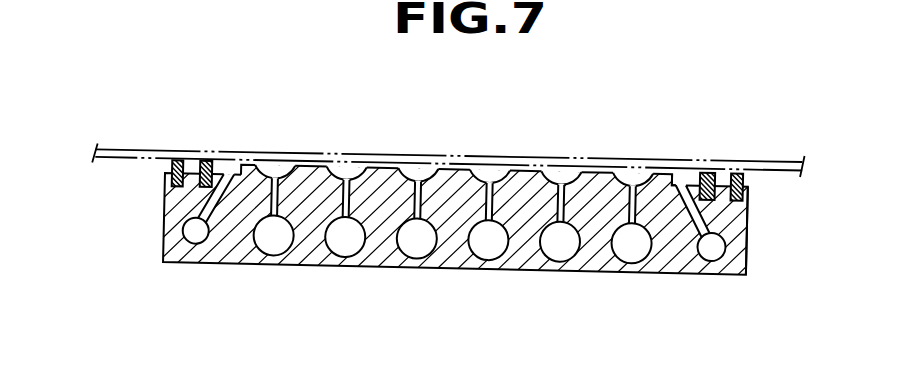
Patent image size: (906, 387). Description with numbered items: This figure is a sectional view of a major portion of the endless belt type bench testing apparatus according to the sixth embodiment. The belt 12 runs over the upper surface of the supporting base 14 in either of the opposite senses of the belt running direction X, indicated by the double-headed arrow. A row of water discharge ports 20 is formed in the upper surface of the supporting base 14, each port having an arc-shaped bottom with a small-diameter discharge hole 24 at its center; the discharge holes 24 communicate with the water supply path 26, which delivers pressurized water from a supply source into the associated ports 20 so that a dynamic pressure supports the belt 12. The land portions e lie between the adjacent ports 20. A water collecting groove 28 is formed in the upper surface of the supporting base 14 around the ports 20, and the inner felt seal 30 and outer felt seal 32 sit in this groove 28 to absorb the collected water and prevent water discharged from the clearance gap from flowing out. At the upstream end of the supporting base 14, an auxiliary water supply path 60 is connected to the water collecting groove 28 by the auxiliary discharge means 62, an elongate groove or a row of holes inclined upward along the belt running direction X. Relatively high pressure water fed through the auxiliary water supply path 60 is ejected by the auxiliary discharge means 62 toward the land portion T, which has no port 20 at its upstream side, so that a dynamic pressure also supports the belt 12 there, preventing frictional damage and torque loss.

The belt 12 is at (742, 168).
The supporting base 14 is at (312, 265).
The water discharge port 20 is at (497, 172).
The discharge hole 24 is at (427, 203).
The water supply path 26 is at (417, 250).
The water collecting groove 28 is at (688, 178).
The inner felt seal 30 is at (748, 237).
The outer felt seal 32 is at (748, 185).
The auxiliary water supply path 60 is at (197, 237).
The auxiliary discharge means 62 is at (217, 205).
The land portion T is at (247, 168).
The land portion e is at (395, 167).
The belt running direction X is at (207, 130).